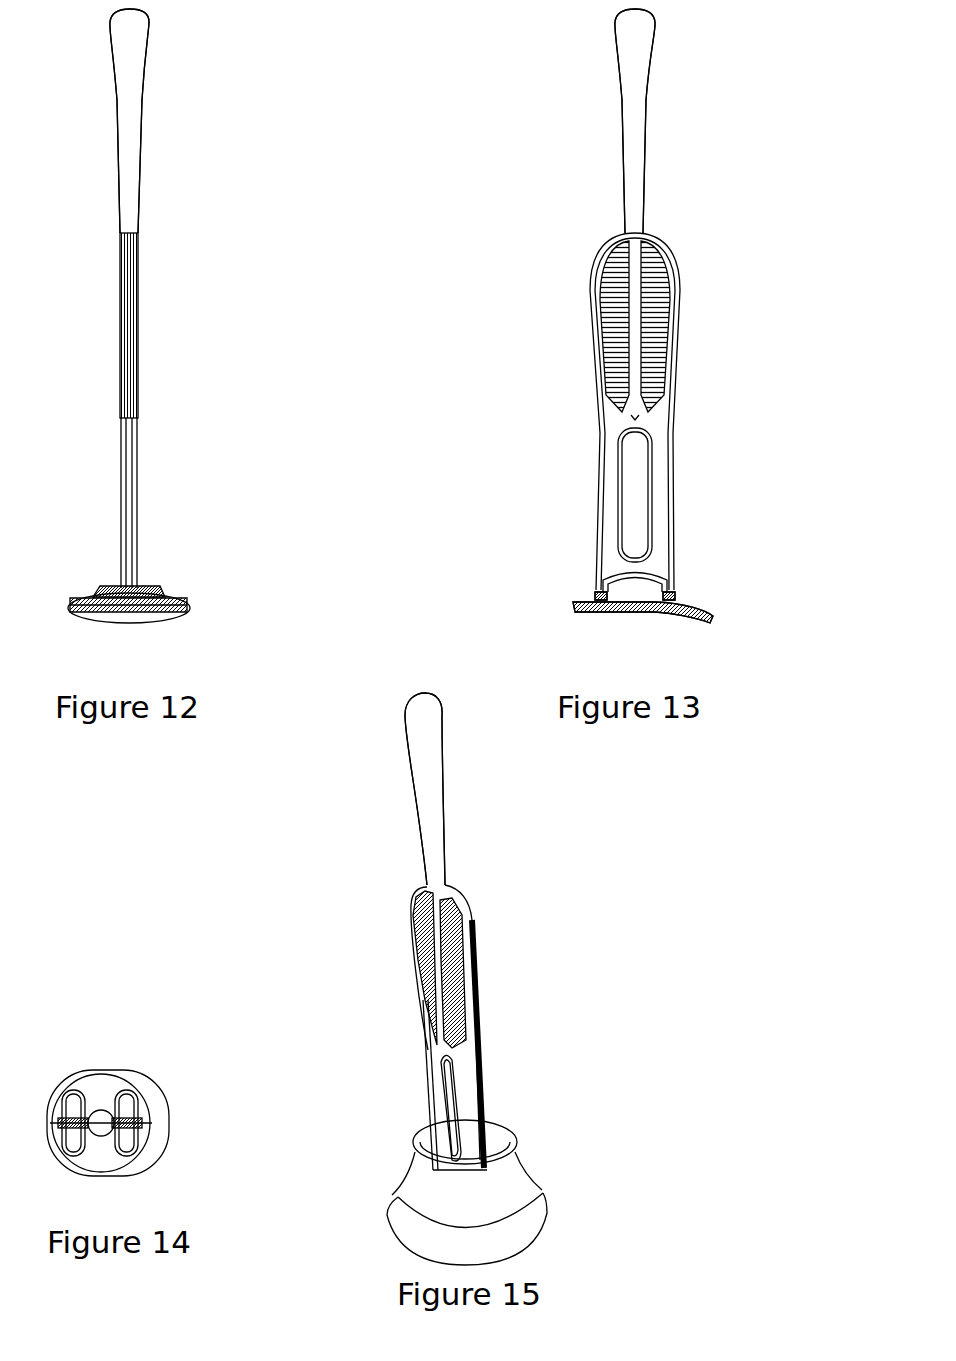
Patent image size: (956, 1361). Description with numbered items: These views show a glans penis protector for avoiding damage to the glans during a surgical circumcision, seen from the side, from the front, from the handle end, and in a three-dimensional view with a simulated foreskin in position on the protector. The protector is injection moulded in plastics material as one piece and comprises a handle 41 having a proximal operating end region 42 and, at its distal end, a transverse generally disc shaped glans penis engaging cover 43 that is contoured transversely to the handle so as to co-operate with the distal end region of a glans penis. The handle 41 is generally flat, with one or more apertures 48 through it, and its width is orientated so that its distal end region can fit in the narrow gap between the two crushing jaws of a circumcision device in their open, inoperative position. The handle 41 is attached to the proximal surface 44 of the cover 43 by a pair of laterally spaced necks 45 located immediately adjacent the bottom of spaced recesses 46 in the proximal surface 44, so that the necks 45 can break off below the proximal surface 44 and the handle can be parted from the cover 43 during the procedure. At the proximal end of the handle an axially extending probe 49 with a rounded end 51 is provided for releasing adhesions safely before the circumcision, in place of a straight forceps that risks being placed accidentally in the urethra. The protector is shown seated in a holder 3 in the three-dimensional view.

In FIG. 15, the holder 3 is at (487, 1218).
In FIG. 12, the handle 41 is at (137, 430).
In FIG. 13, the handle 41 is at (615, 433).
In FIG. 14, the handle 41 is at (112, 1155).
In FIG. 15, the handle 41 is at (473, 1023).
In FIG. 12, the proximal operating end region 42 is at (133, 270).
In FIG. 13, the proximal operating end region 42 is at (588, 277).
In FIG. 15, the proximal operating end region 42 is at (450, 890).
In FIG. 12, the glans penis engaging cover 43 is at (147, 608).
In FIG. 13, the glans penis engaging cover 43 is at (602, 615).
In FIG. 12, the proximal surface 44 is at (163, 588).
In FIG. 13, the proximal surface 44 is at (673, 600).
In FIG. 13, the necks 45 is at (600, 593).
In FIG. 12, the recesses 46 is at (142, 588).
In FIG. 13, the recesses 46 is at (650, 569).
In FIG. 14, the recesses 46 is at (122, 1095).
In FIG. 13, the apertures 48 is at (637, 493).
In FIG. 15, the apertures 48 is at (452, 1110).
In FIG. 12, the probe 49 is at (128, 128).
In FIG. 13, the probe 49 is at (633, 128).
In FIG. 15, the probe 49 is at (432, 813).
In FIG. 12, the rounded end 51 is at (135, 13).
In FIG. 13, the rounded end 51 is at (640, 13).
In FIG. 15, the rounded end 51 is at (423, 712).